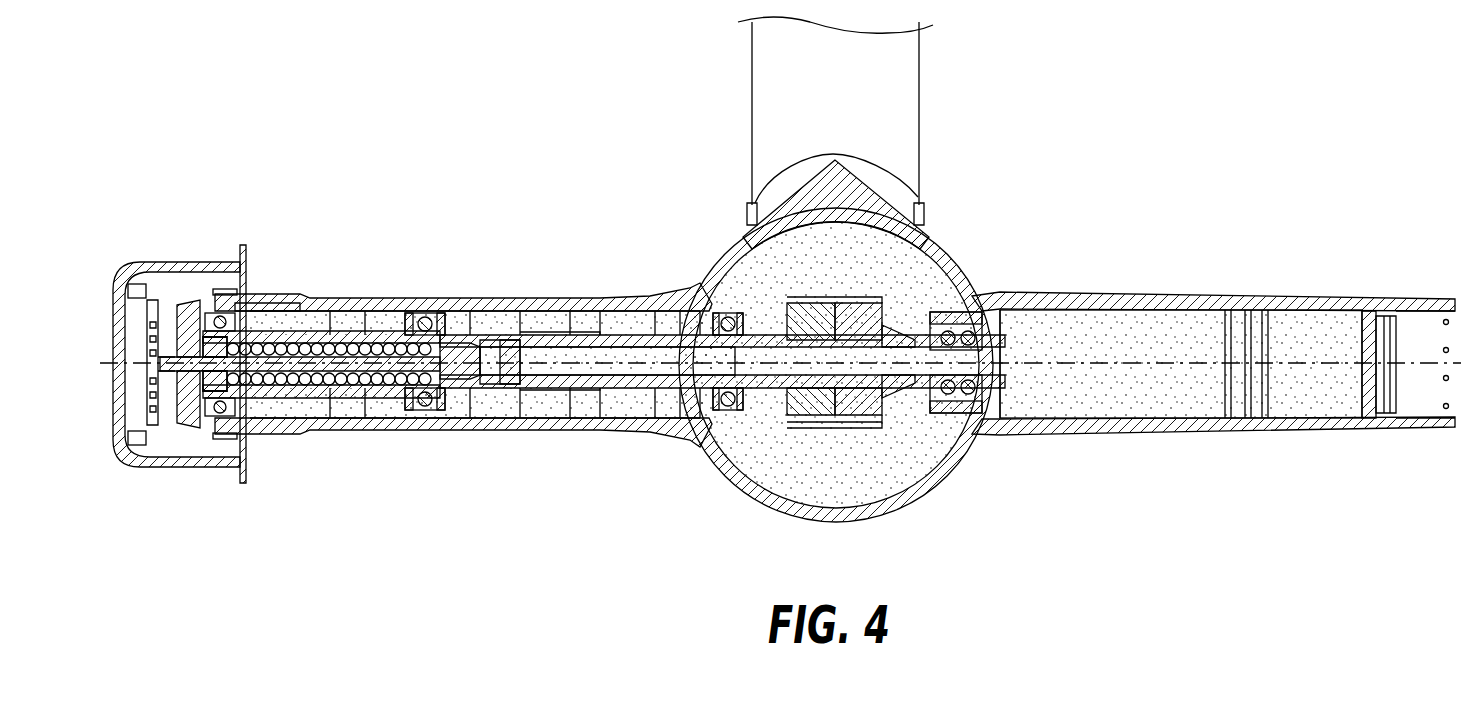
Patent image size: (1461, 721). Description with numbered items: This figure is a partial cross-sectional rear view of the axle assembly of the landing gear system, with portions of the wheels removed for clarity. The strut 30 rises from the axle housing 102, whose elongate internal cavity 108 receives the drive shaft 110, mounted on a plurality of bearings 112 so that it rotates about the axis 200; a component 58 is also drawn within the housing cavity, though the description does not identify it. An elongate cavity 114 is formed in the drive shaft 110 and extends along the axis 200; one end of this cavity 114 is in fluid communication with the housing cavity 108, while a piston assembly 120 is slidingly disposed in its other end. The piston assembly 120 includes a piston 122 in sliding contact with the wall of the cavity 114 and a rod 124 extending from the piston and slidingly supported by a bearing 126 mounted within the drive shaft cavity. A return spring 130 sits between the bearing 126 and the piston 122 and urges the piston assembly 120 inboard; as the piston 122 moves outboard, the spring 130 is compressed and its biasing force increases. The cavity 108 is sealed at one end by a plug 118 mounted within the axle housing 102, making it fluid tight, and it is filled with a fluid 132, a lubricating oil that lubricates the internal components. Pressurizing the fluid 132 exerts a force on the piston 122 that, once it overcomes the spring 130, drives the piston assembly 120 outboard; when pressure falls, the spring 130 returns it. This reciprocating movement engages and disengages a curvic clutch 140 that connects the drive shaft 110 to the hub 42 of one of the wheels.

The strut 30 is at (919, 85).
The hub 42 is at (125, 266).
The rotor 58 is at (866, 315).
The axle housing 102 is at (1030, 288).
The internal cavity 108 is at (520, 312).
The drive shaft 110 is at (558, 342).
The bearings 112 is at (298, 412).
The drive shaft cavity 114 is at (568, 370).
The plug 118 is at (1372, 316).
The piston assembly 120 is at (321, 340).
The piston 122 is at (467, 378).
The rod 124 is at (322, 375).
The bearing 126 is at (210, 333).
The return spring 130 is at (355, 343).
The fluid 132 is at (380, 315).
The curvic clutch 140 is at (155, 428).
The axis 200 is at (648, 363).